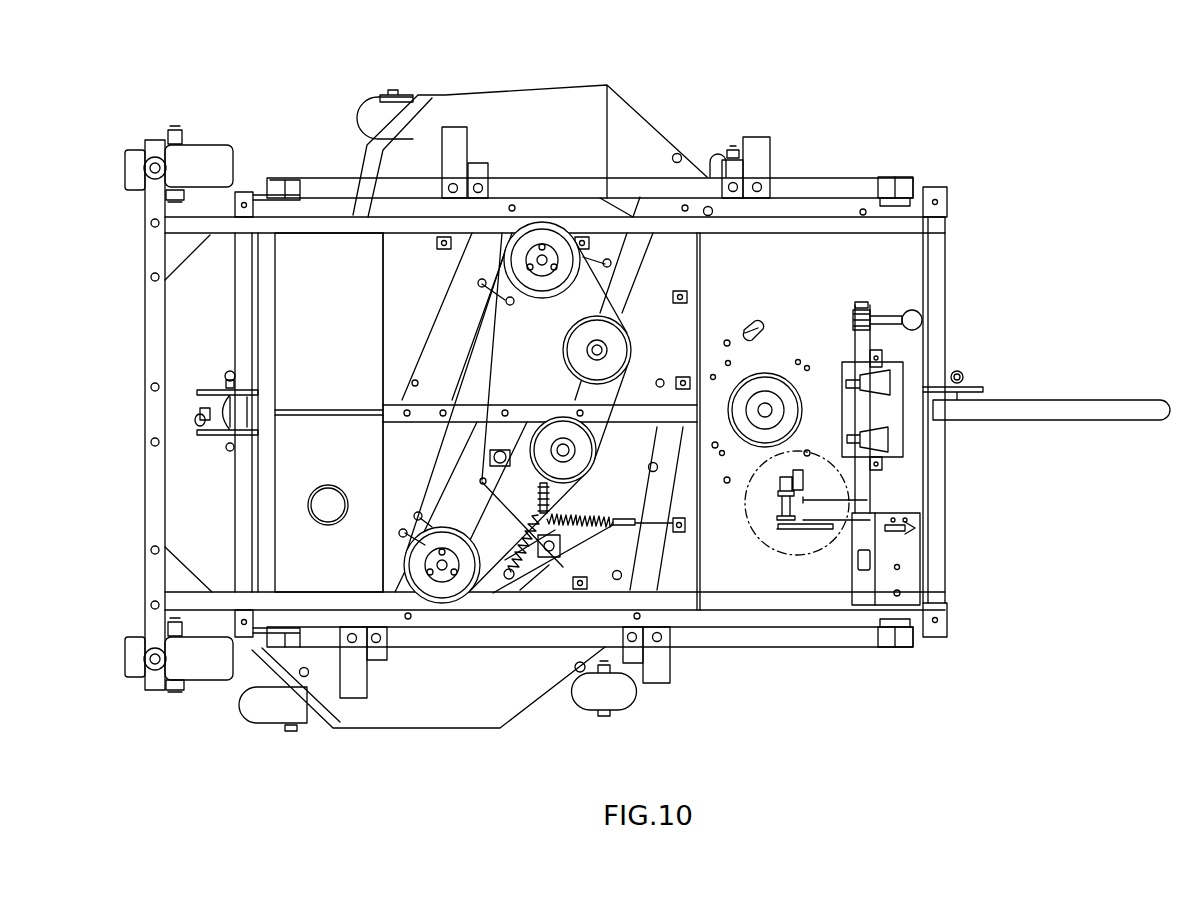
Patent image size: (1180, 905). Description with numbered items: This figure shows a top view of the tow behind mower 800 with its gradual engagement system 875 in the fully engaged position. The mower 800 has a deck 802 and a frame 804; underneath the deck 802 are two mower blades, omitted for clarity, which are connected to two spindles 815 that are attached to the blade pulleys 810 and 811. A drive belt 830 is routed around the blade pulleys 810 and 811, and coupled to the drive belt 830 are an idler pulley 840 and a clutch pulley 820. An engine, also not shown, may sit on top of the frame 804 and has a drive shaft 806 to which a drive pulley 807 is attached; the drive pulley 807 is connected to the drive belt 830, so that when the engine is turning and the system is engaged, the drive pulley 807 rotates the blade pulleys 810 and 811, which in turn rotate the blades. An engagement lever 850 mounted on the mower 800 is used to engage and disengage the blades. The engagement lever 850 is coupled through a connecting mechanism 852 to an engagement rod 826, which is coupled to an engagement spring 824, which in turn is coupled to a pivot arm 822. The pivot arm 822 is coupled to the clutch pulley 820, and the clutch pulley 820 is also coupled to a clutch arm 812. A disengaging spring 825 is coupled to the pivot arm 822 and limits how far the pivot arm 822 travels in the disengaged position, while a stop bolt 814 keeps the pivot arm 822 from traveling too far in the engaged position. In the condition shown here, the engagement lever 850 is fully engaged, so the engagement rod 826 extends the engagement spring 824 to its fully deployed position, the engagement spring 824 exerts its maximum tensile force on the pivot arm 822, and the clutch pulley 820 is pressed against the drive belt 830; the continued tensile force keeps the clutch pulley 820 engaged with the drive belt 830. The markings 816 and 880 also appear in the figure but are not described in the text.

The tow behind mower 800 is at (823, 92).
The deck 802 is at (523, 108).
The frame 804 is at (413, 222).
The drive shaft 806 is at (800, 400).
The drive pulley 807 is at (750, 380).
The blade pulley 810 is at (515, 253).
The blade pulley 811 is at (442, 545).
The clutch arm 812 is at (493, 462).
The stop bolt 814 is at (575, 580).
The spindle 815 is at (558, 253).
The link 816 is at (508, 585).
The clutch pulley 820 is at (577, 462).
The pivot arm 822 is at (523, 580).
The engagement spring 824 is at (582, 530).
The disengaging spring 825 is at (492, 585).
The engagement rod 826 is at (628, 508).
The drive belt 830 is at (658, 383).
The idler pulley 840 is at (600, 347).
The engagement lever 850 is at (920, 318).
The connecting mechanism 852 is at (800, 548).
The gradual engagement system 875 is at (643, 747).
The direction of travel 880 is at (716, 560).